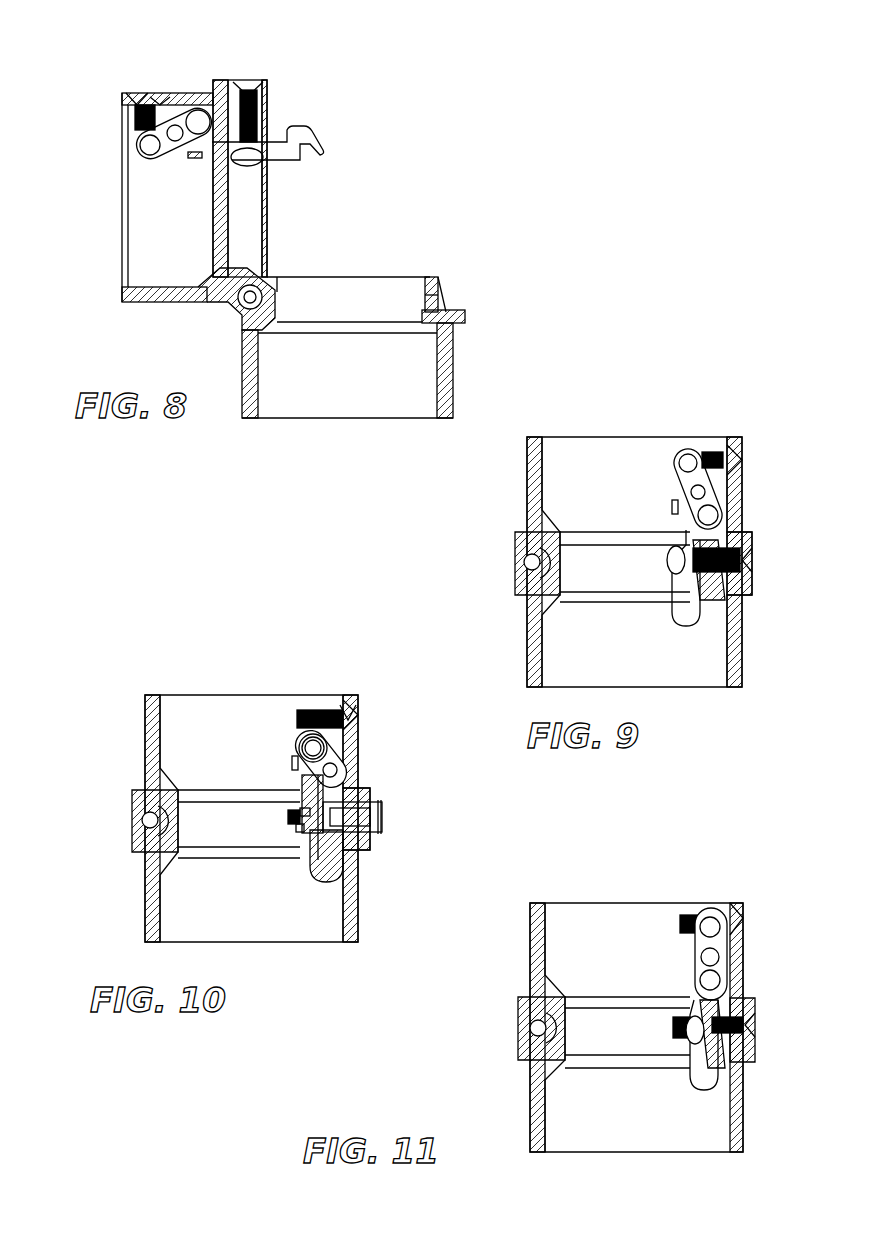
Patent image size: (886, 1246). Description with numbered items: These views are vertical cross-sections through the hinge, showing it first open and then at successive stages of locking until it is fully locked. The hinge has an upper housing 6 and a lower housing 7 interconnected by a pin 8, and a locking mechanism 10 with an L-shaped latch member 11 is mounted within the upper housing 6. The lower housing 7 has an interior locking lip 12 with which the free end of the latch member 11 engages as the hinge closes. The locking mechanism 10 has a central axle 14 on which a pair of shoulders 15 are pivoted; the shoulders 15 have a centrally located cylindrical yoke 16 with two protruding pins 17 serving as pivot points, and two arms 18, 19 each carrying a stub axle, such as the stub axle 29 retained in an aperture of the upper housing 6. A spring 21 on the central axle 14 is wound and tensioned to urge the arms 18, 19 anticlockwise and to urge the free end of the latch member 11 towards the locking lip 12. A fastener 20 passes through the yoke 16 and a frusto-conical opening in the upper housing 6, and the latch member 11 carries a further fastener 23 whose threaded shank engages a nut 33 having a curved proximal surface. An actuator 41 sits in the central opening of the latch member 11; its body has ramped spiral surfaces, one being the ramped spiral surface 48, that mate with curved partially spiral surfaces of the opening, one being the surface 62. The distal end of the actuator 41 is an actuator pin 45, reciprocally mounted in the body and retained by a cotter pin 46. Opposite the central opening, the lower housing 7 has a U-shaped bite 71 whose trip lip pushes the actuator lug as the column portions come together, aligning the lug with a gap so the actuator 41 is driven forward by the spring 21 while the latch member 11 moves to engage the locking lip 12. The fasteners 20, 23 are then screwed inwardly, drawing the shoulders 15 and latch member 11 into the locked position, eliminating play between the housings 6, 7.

In FIG. 8, the upper housing 6 is at (150, 293).
In FIG. 9, the upper housing 6 is at (633, 562).
In FIG. 10, the upper housing 6 is at (251, 818).
In FIG. 11, the upper housing 6 is at (540, 936).
In FIG. 8, the lower housing 7 is at (443, 383).
In FIG. 11, the lower housing 7 is at (735, 1118).
In FIG. 8, the pin 8 is at (244, 300).
In FIG. 11, the pin 8 is at (534, 1029).
In FIG. 8, the locking mechanism 10 is at (124, 162).
In FIG. 8, the latch member 11 is at (320, 152).
In FIG. 9, the latch member 11 is at (688, 613).
In FIG. 10, the latch member 11 is at (322, 863).
In FIG. 8, the locking lip 12 is at (437, 332).
In FIG. 11, the locking lip 12 is at (735, 1068).
In FIG. 9, the central axle 14 is at (700, 492).
In FIG. 8, the shoulders 15 is at (156, 158).
In FIG. 10, the cylindrical yoke 16 is at (303, 710).
In FIG. 9, the protruding pins 17 is at (688, 463).
In FIG. 11, the arm 18 is at (690, 915).
In FIG. 10, the arm 19 is at (292, 727).
In FIG. 8, the fastener 20 is at (153, 98).
In FIG. 9, the fastener 20 is at (735, 447).
In FIG. 10, the fastener 20 is at (346, 710).
In FIG. 9, the spring 21 is at (676, 504).
In FIG. 10, the spring 21 is at (296, 760).
In FIG. 8, the fastener 23 is at (258, 80).
In FIG. 11, the fastener 23 is at (757, 1024).
In FIG. 9, the stub axle 29 is at (710, 515).
In FIG. 9, the nut 33 is at (676, 565).
In FIG. 11, the nut 33 is at (695, 1032).
In FIG. 10, the actuator 41 is at (385, 822).
In FIG. 10, the actuator pin 45 is at (305, 820).
In FIG. 10, the cotter pin 46 is at (300, 824).
In FIG. 10, the ramped spiral surface 48 is at (330, 812).
In FIG. 10, the curved partially spiral surface 62 is at (318, 842).
In FIG. 8, the U-shaped bite 71 is at (428, 288).